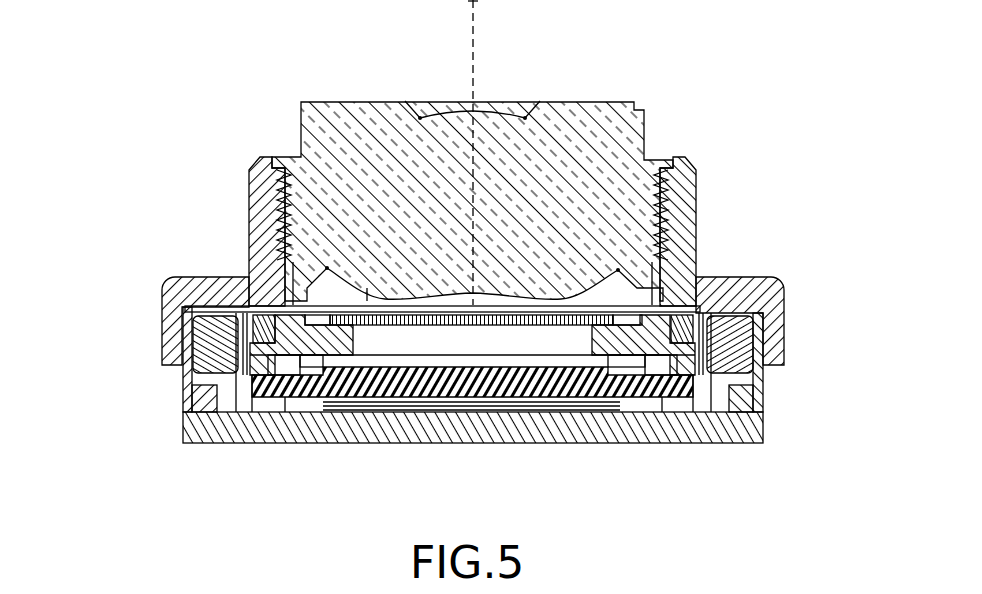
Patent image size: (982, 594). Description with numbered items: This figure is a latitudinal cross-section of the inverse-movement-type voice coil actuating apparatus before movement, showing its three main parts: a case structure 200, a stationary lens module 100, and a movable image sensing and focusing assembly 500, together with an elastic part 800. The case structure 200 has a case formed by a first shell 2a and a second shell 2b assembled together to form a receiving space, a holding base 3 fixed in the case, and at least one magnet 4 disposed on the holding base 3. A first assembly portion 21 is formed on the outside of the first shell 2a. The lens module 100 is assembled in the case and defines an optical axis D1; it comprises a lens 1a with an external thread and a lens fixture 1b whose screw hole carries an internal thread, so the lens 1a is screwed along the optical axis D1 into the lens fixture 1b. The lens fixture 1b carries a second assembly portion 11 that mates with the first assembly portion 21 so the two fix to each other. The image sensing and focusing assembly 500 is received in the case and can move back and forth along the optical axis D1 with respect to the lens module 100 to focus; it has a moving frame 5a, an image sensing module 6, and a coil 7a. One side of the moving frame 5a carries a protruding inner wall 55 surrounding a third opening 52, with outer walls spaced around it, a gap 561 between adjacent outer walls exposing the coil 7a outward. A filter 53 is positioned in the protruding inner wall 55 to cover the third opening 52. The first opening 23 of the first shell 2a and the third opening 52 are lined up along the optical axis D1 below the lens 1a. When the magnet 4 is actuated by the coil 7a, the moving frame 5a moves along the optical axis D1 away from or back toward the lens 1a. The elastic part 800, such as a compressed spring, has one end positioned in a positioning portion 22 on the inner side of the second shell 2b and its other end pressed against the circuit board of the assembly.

The optical axis D1 is at (473, 56).
The lens module 100 is at (533, 184).
The lens 1a is at (643, 126).
The lens fixture 1b is at (499, 218).
The second assembly portion 11 is at (172, 278).
The first assembly portion 21 is at (227, 308).
The first opening 23 is at (373, 312).
The protruding inner wall 55 is at (290, 316).
The gap 561 is at (250, 312).
The case structure 200 is at (386, 381).
The magnet 4 is at (182, 342).
The holding base 3 is at (185, 395).
The first shell 2a is at (194, 398).
The second shell 2b is at (424, 433).
The image sensing and focusing assembly 500 is at (589, 351).
The coil 7a is at (772, 287).
The moving frame 5a is at (740, 342).
The image sensing module 6 is at (548, 397).
The elastic part 800 is at (325, 403).
The third opening 52 is at (403, 340).
The filter 53 is at (437, 327).
The positioning portion 22 is at (548, 382).